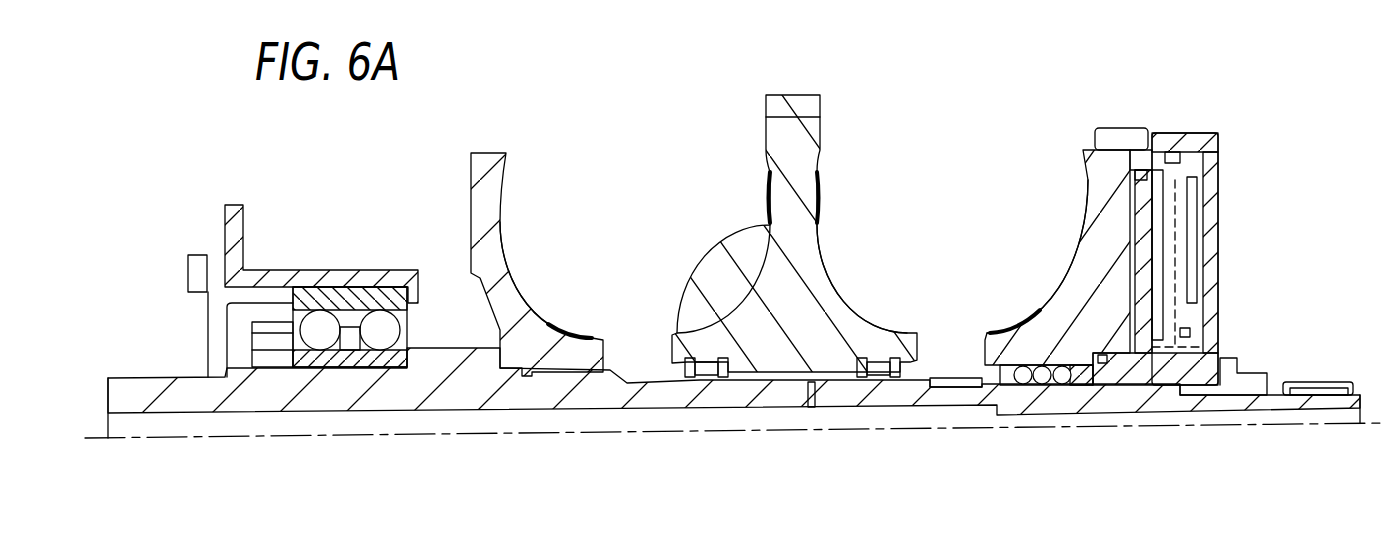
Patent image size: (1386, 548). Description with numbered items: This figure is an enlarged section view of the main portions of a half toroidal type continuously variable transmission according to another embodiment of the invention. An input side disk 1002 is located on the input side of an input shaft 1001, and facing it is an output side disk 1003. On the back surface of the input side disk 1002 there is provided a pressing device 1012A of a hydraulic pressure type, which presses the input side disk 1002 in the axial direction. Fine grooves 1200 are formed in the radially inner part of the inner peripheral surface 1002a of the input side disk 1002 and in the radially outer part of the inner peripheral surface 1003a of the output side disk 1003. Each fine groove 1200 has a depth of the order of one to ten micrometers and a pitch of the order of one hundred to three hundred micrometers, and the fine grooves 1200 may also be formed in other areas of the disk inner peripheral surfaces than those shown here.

The input shaft 1001 is at (653, 393).
The input side disk 1002 is at (488, 190).
The inner peripheral surface of the input side disk 1002a is at (512, 248).
The output side disk 1003 is at (807, 138).
The inner peripheral surface of the output side disk 1003a is at (718, 313).
The fine grooves 1200 is at (572, 325).
The pressing device 1012A is at (1235, 162).